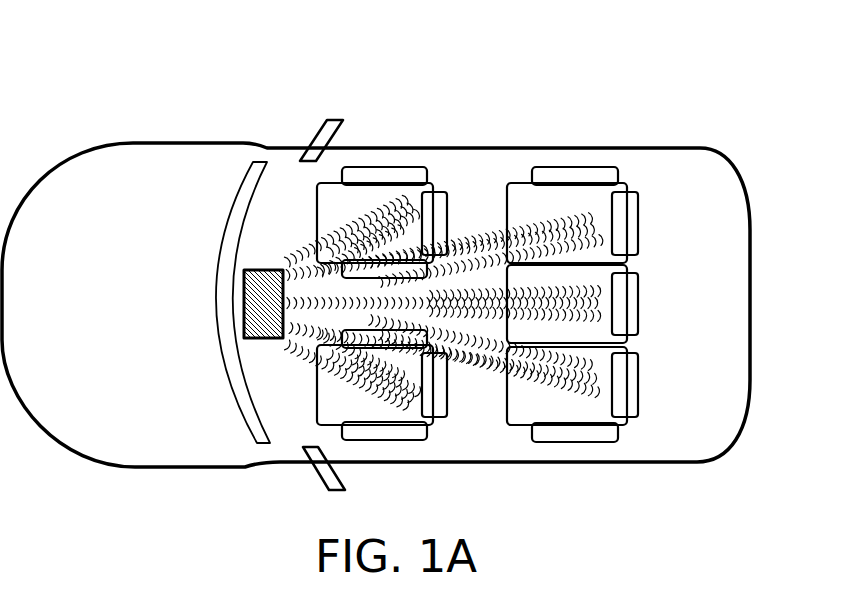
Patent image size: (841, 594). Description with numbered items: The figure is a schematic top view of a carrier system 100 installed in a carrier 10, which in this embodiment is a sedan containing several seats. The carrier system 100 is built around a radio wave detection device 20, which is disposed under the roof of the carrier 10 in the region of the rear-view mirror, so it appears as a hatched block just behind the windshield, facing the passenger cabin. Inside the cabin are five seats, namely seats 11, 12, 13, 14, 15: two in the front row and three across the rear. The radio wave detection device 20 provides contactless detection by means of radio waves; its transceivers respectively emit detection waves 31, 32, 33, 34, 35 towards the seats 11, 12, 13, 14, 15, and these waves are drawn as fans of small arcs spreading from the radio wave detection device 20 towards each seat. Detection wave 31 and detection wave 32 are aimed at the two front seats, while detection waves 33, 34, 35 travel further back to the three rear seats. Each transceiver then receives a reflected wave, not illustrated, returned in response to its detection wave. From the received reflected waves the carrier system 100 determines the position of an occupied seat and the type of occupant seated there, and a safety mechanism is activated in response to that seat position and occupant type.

The carrier system 100 is at (183, 105).
The carrier 10 is at (668, 153).
The radio wave detection device 20 is at (262, 268).
The seat 11 is at (440, 395).
The seat 12 is at (438, 222).
The seat 13 is at (630, 227).
The seat 14 is at (632, 313).
The seat 15 is at (630, 400).
The detection wave 31 is at (358, 392).
The detection wave 32 is at (355, 220).
The detection wave 33 is at (542, 218).
The detection wave 34 is at (482, 320).
The detection wave 35 is at (545, 393).